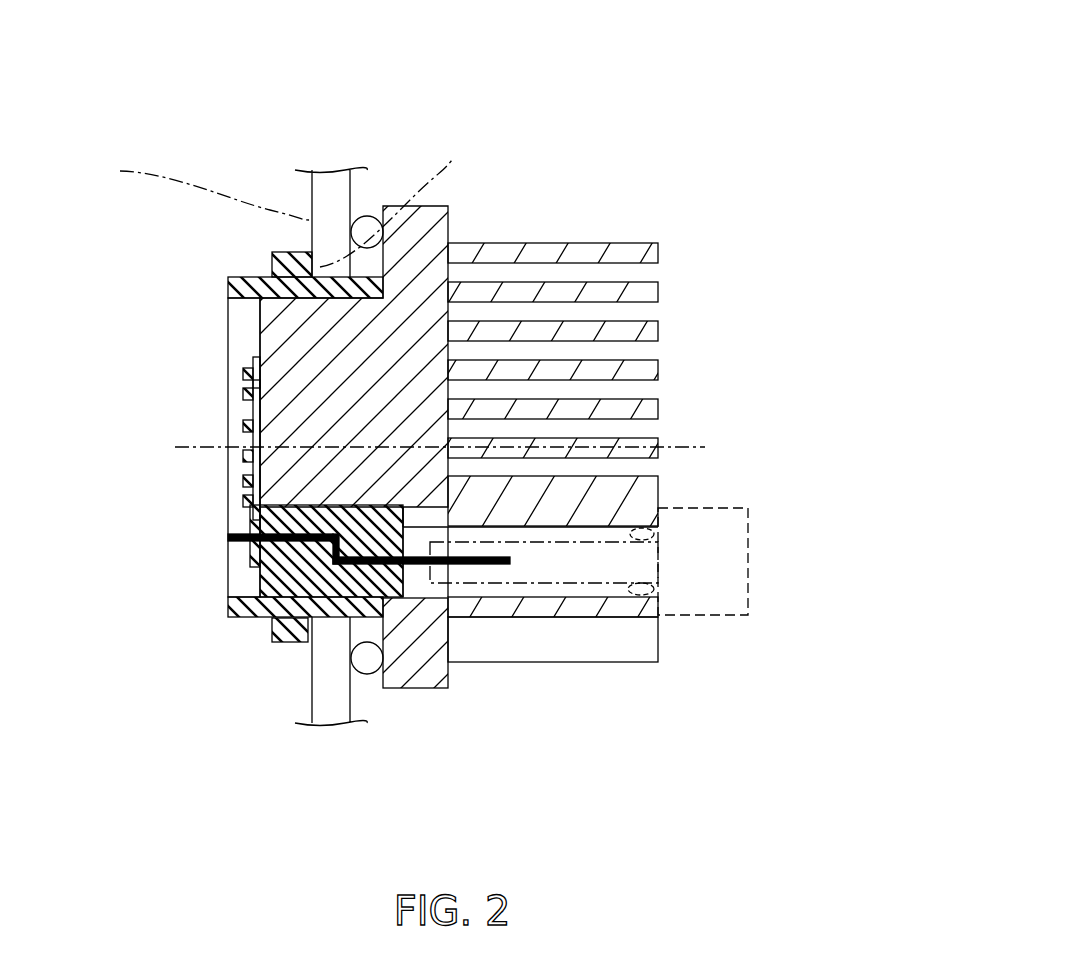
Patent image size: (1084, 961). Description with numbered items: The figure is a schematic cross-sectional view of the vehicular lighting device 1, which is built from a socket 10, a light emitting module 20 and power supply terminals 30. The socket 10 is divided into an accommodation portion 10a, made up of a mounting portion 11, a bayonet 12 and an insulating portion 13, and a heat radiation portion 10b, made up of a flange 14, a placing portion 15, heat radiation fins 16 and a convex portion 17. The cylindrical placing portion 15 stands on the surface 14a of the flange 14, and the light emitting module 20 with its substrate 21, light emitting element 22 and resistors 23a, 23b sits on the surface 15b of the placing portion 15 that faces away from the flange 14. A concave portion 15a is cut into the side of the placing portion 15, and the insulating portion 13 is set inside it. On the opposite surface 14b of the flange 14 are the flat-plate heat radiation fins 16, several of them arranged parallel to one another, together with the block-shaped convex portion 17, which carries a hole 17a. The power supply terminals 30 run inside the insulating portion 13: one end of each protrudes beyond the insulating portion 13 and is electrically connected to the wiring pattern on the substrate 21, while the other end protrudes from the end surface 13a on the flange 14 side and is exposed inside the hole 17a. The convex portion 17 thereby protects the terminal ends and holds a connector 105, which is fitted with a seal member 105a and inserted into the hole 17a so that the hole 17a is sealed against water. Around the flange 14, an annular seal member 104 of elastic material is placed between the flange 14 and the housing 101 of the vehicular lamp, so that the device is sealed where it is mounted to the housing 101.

The vehicular lighting device 1 is at (725, 105).
The socket 10 is at (413, 58).
The accommodation portion 10a is at (283, 248).
The heat radiation portion 10b is at (410, 255).
The housing 101 is at (190, 192).
The seal member 104 is at (322, 267).
The mounting portion 11 is at (245, 607).
The bayonet 12 is at (292, 630).
The insulating portion 13 is at (312, 578).
The end surface 13a is at (407, 515).
The flange 14 is at (418, 203).
The surface 14a is at (362, 230).
The surface 14b is at (452, 672).
The placing portion 15 is at (330, 343).
The concave portion 15a is at (372, 513).
The surface 15b is at (258, 330).
The heat radiation fin 16 is at (640, 252).
The convex portion 17 is at (637, 493).
The hole 17a is at (577, 593).
The light emitting module 20 is at (238, 515).
The substrate 21 is at (252, 358).
The light emitting element 22 is at (248, 430).
The resistor 23a is at (243, 492).
The resistor 23b is at (250, 387).
The power supply terminal 30 is at (396, 570).
The connector 105 is at (715, 505).
The seal member 105a is at (630, 528).